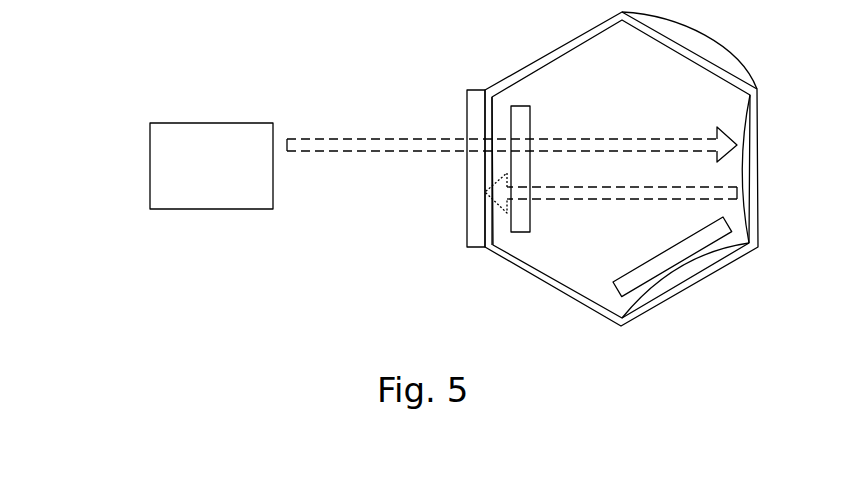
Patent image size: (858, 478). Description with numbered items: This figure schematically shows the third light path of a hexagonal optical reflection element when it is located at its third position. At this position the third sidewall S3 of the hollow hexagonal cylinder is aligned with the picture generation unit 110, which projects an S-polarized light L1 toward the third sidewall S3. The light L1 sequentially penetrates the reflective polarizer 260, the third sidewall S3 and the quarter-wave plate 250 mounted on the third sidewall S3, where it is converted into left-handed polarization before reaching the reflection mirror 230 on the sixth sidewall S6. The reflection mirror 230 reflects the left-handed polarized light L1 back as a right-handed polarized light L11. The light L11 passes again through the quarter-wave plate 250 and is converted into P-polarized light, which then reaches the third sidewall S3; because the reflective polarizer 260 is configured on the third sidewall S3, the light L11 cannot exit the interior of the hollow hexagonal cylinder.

The picture generation unit 110 is at (236, 176).
The reflection mirror 230 is at (746, 187).
The quarter-wave plate 250 is at (520, 106).
The reflective polarizer 260 is at (472, 182).
The third sidewall S3 is at (487, 220).
The sixth sidewall S6 is at (755, 157).
The light L1 is at (512, 133).
The right-handed polarized light L11 is at (611, 186).